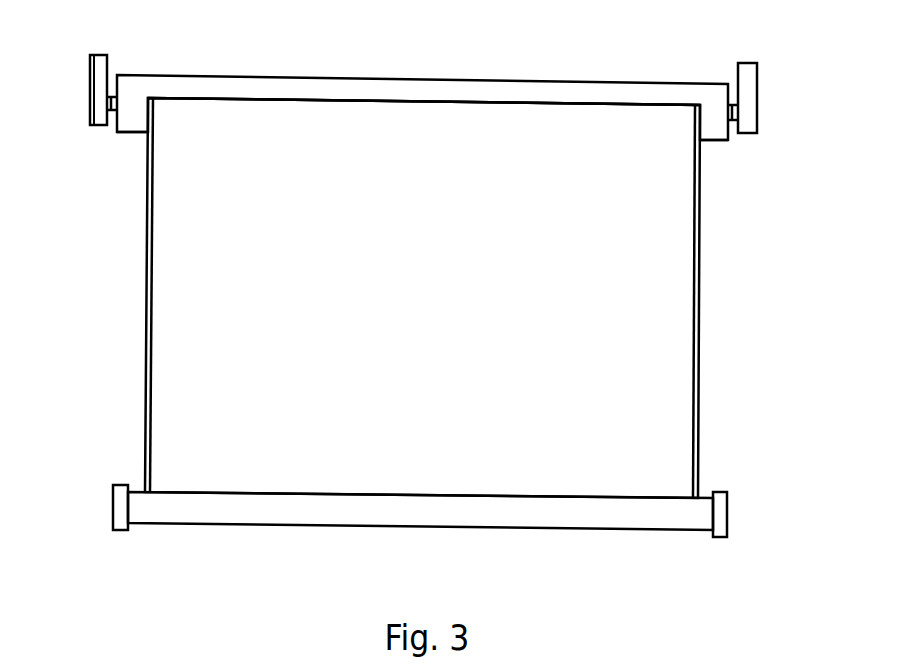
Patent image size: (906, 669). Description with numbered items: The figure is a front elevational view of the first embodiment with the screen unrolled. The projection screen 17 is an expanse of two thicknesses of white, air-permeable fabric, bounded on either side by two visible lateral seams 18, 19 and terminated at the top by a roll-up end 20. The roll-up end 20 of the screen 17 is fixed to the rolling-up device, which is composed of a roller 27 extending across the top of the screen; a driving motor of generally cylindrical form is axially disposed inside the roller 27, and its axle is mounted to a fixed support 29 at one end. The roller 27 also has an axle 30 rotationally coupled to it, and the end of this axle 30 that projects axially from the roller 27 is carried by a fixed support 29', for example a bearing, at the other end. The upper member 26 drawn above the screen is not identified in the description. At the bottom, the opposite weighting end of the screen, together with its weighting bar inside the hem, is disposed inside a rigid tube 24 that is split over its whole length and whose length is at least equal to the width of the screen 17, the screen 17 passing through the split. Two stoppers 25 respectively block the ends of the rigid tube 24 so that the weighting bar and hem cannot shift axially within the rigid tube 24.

The projection screen 17 is at (416, 412).
The lateral seam 18 is at (145, 337).
The lateral seam 19 is at (700, 308).
The roll-up end 20 is at (288, 100).
The rigid tube 24 is at (255, 515).
The stopper 25 is at (122, 525).
The upper frame bar 26 is at (570, 82).
The roller 27 is at (132, 120).
The fixed support 29 is at (767, 67).
The fixed support 29' is at (70, 126).
The axle 30 is at (110, 98).